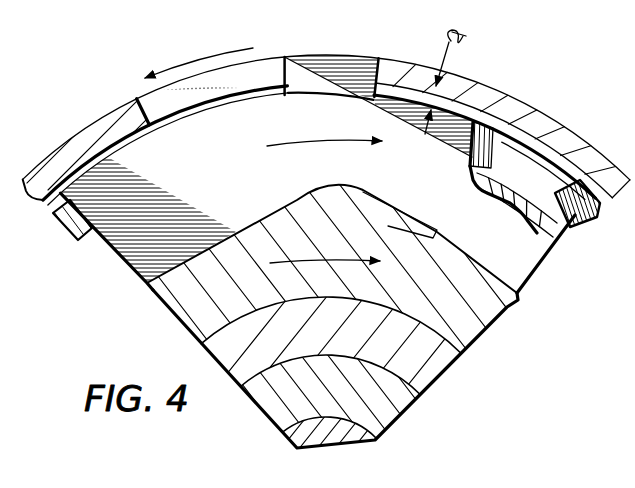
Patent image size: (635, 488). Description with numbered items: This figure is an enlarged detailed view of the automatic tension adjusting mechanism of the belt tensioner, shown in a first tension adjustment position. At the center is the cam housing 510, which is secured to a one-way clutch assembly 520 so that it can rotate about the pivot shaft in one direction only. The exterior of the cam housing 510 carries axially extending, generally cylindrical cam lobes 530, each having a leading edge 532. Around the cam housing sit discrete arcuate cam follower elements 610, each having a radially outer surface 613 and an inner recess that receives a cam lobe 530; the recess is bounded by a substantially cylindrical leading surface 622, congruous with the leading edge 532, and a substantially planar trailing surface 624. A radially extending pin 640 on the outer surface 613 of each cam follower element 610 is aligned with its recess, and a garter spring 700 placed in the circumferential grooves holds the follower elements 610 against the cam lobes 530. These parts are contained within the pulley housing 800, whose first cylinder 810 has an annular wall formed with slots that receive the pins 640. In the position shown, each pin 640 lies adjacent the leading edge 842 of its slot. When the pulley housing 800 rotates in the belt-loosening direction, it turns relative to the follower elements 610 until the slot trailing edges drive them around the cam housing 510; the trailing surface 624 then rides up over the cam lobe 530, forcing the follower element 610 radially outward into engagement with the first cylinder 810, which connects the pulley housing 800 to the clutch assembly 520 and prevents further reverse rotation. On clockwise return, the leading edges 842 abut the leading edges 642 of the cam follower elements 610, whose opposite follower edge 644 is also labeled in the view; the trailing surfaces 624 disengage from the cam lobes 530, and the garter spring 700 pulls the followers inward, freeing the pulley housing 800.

The cam housing 510 is at (472, 314).
The clutch assembly 520 is at (430, 358).
The cam lobe 530 is at (341, 208).
The leading edge of cam lobe 532 is at (283, 208).
The cam follower element 610 is at (298, 126).
The radially outer surface 613 is at (474, 104).
The leading surface 622 is at (288, 204).
The trailing surface 624 is at (408, 221).
The pin 640 is at (339, 72).
The leading edge of cam follower element 642 is at (282, 62).
The hatched region 644 is at (383, 60).
The garter spring 700 is at (588, 223).
The pulley housing 800 is at (602, 151).
The first cylinder 810 is at (558, 120).
The leading edge of slot 842 is at (148, 90).